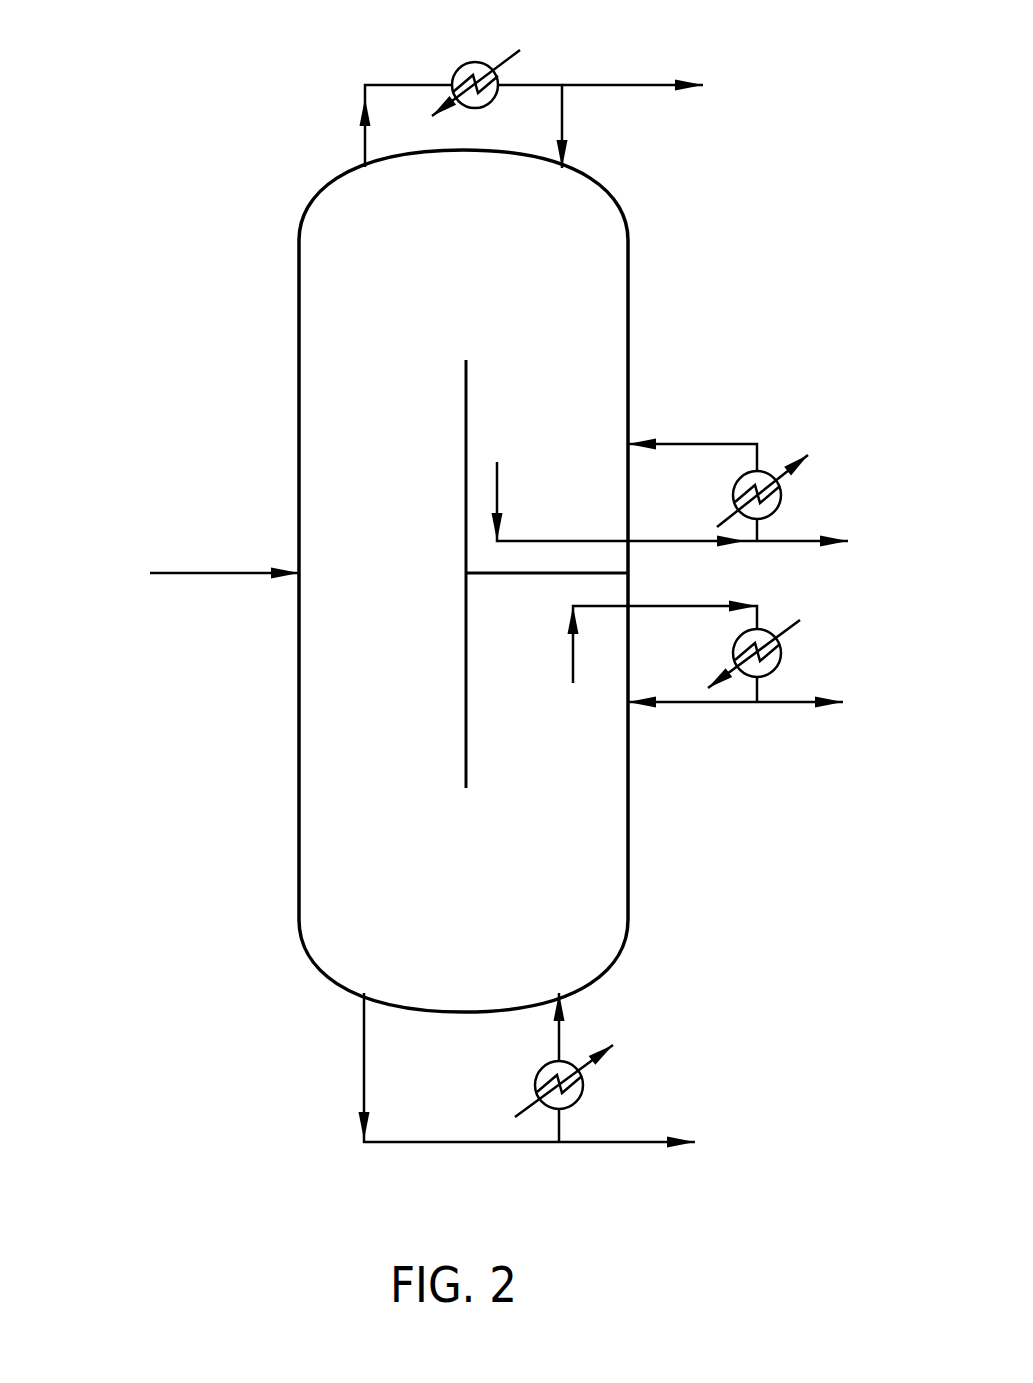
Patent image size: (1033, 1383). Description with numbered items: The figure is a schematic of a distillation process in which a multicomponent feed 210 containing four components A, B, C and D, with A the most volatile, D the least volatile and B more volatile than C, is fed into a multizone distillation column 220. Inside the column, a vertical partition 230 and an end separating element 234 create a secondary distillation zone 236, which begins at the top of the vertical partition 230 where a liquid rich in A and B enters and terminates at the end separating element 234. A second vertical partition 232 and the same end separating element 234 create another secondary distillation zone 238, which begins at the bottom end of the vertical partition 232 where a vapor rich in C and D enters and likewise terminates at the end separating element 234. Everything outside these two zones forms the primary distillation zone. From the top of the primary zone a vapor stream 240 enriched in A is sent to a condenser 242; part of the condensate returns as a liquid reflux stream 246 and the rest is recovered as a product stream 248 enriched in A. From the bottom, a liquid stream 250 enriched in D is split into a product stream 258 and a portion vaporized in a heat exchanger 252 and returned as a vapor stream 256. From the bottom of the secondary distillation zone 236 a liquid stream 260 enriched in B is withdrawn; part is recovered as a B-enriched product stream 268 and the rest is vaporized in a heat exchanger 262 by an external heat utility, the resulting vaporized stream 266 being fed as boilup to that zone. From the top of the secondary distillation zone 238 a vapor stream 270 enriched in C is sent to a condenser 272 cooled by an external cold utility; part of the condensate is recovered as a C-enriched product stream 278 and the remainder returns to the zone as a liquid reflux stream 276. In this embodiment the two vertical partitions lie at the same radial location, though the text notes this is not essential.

The multicomponent feed 210 is at (223, 575).
The multizone distillation column 220 is at (299, 328).
The vertical partition 230 is at (466, 424).
The vertical partition 232 is at (466, 734).
The end separating element 234 is at (557, 574).
The secondary distillation zone 236 is at (580, 457).
The secondary distillation zone 238 is at (583, 753).
The vapor stream 240 is at (365, 147).
The condenser 242 is at (475, 62).
The liquid reflux stream 246 is at (562, 118).
The product stream 248 is at (613, 85).
The liquid stream 250 is at (364, 1043).
The heat exchanger 252 is at (583, 1100).
The vapor stream 256 is at (559, 1038).
The product stream 258 is at (593, 1142).
The liquid stream 260 is at (670, 541).
The heat exchanger 262 is at (781, 500).
The vaporized stream 266 is at (700, 444).
The B-enriched product stream 268 is at (792, 541).
The vapor stream 270 is at (702, 606).
The condenser 272 is at (781, 658).
The liquid reflux stream 276 is at (688, 702).
The C-enriched product stream 278 is at (790, 702).